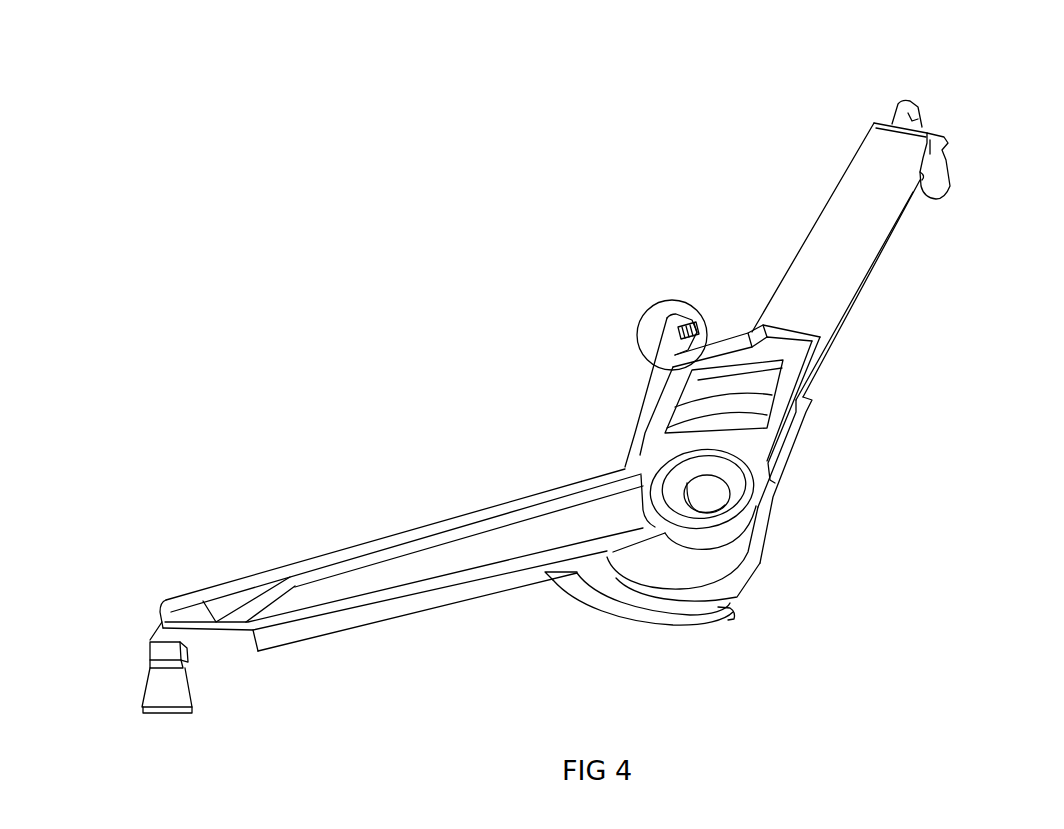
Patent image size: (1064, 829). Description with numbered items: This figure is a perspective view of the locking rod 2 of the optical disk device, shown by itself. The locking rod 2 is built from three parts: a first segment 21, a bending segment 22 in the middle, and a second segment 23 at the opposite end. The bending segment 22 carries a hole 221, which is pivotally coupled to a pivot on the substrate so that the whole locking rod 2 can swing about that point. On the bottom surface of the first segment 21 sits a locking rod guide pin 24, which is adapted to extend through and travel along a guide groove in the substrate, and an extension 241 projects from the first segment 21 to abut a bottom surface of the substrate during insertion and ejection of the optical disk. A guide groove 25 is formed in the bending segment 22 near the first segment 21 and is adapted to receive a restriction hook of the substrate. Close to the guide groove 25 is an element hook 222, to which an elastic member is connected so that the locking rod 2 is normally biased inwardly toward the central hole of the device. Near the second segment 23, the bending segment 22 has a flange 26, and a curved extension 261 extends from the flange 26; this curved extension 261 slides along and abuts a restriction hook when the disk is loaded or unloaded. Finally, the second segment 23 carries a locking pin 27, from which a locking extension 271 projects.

The locking rod 2 is at (406, 188).
The first segment 21 is at (860, 277).
The bending segment 22 is at (847, 519).
The hole 221 is at (738, 483).
The element hook 222 is at (658, 324).
The second segment 23 is at (411, 625).
The locking rod guide pin 24 is at (962, 166).
The extension 241 is at (932, 88).
The guide groove 25 is at (719, 372).
The flange 26 is at (618, 618).
The curved extension 261 is at (719, 627).
The locking pin 27 is at (150, 621).
The locking extension 271 is at (190, 701).